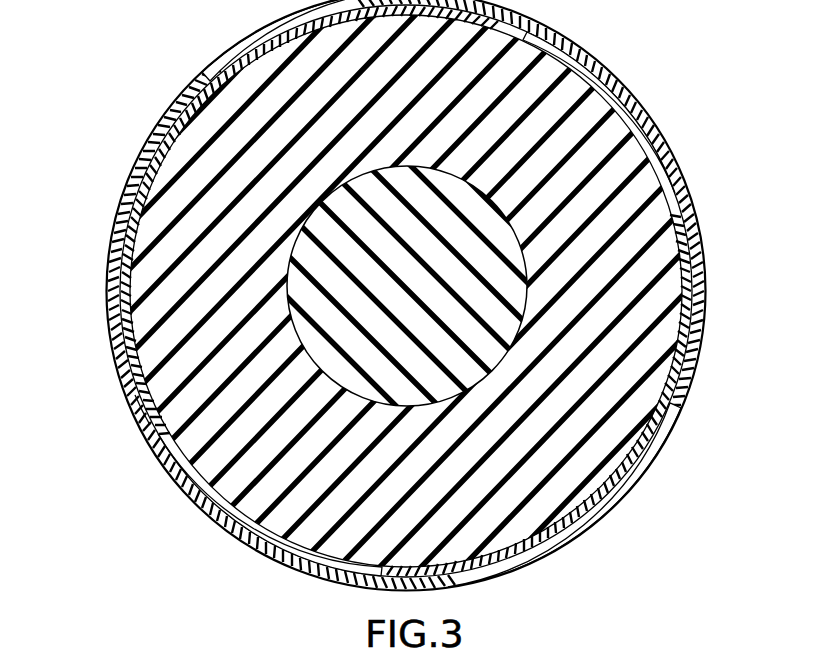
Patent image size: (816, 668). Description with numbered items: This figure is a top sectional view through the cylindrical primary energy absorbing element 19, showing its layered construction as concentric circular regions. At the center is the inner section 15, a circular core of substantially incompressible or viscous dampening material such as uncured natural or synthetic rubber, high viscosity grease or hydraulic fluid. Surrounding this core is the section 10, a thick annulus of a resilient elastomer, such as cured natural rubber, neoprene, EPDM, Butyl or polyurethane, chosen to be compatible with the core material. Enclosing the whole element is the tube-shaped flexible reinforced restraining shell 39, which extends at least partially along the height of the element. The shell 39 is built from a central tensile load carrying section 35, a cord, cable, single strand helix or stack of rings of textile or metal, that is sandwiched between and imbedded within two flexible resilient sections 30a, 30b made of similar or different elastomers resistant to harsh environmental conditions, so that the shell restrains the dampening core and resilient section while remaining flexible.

The section 10 is at (165, 300).
The inner section 15 is at (483, 345).
The primary energy absorbing element 19 is at (165, 410).
The flexible resilient section 30a is at (630, 108).
The flexible resilient section 30b is at (668, 178).
The central tensile load carrying section 35 is at (553, 42).
The flexible reinforced restraining shell 39 is at (130, 173).